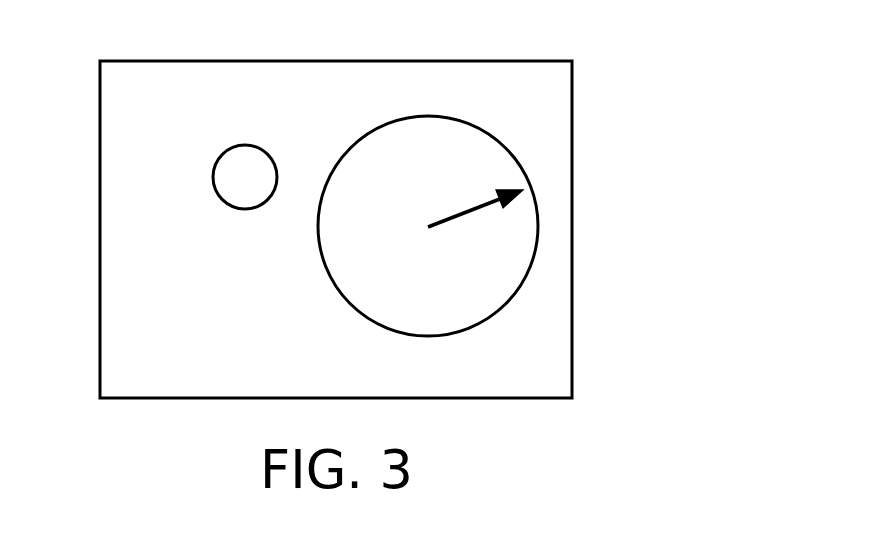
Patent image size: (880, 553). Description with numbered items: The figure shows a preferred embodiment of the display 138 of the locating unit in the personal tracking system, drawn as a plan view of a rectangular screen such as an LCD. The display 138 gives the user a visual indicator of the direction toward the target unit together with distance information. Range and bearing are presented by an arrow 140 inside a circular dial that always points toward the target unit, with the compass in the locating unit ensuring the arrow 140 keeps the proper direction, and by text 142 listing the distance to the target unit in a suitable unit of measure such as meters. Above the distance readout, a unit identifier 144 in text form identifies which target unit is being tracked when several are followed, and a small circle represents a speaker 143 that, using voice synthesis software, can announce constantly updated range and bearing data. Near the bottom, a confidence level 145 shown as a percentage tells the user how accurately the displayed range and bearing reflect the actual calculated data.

The display 138 is at (108, 382).
The arrow 140 is at (463, 215).
The text 142 is at (120, 240).
The speaker 143 is at (212, 178).
The unit identifier 144 is at (205, 82).
The confidence level 145 is at (278, 360).